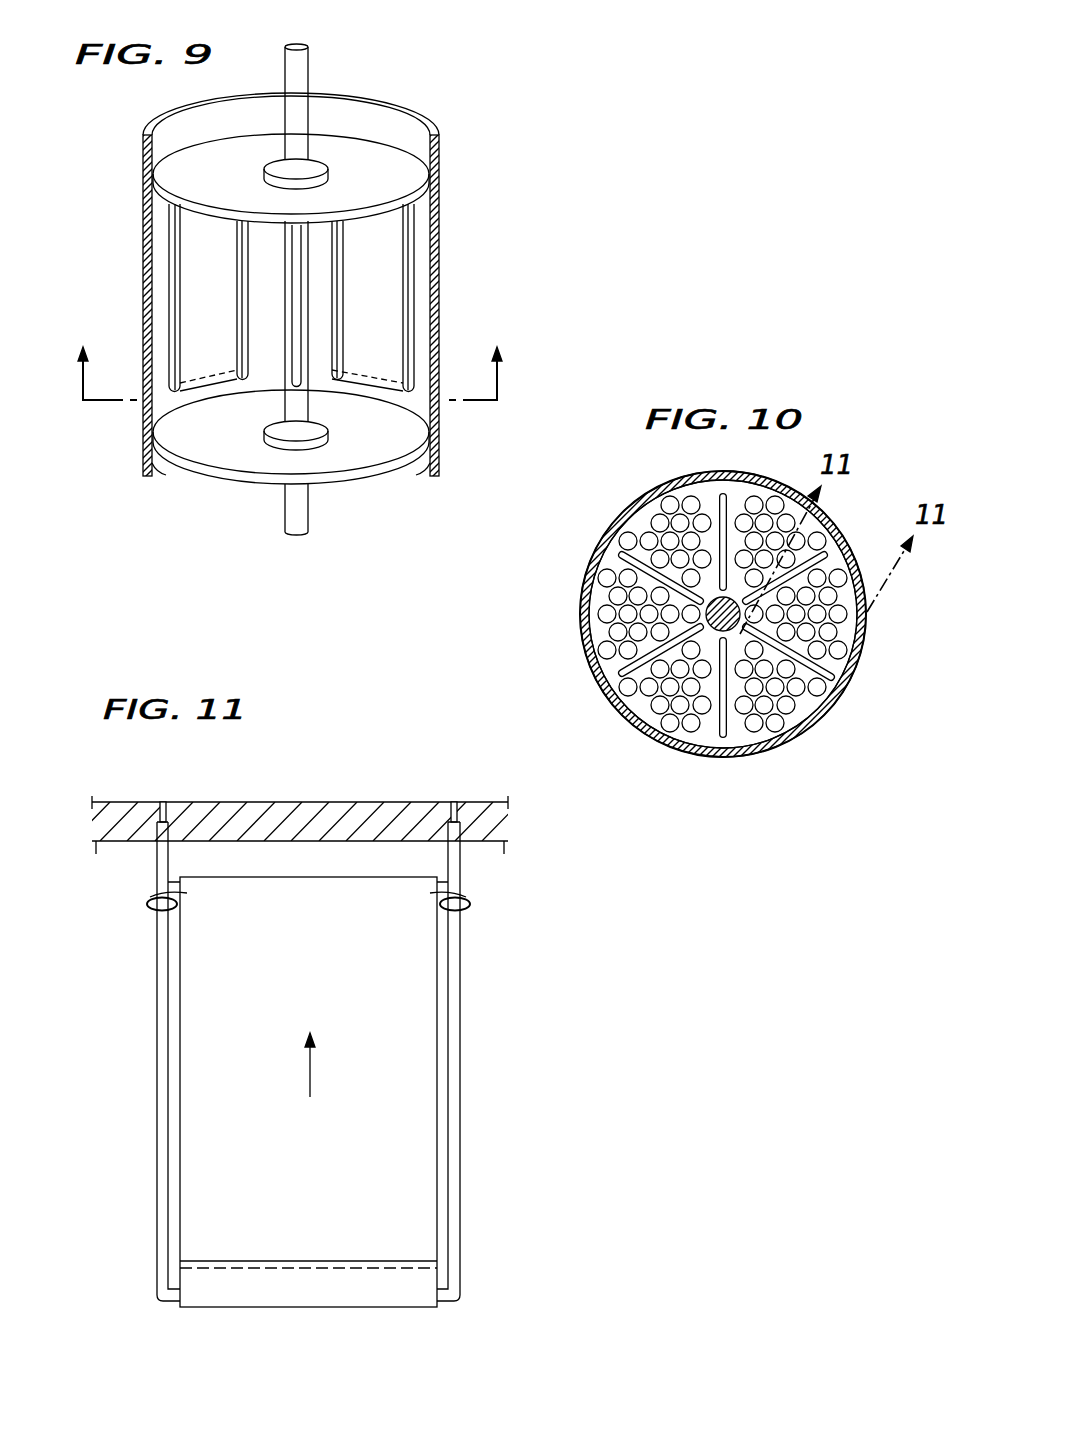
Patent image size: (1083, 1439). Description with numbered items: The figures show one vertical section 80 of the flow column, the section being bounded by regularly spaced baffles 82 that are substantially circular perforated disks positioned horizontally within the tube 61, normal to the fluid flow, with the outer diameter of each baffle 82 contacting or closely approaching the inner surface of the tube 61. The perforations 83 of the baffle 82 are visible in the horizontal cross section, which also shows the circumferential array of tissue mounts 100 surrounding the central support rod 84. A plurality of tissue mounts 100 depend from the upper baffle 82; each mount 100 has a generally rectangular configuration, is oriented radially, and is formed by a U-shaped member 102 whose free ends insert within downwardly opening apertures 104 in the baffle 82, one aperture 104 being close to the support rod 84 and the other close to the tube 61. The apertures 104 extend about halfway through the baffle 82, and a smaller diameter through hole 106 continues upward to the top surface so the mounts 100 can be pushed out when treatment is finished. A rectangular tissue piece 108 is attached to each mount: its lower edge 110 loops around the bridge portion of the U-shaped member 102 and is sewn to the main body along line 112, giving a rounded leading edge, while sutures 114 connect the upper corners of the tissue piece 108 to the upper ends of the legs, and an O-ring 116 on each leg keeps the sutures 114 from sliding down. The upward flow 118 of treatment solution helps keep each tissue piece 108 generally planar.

In FIG. 9, the vertical section 80 is at (482, 132).
In FIG. 9, the tube 61 is at (143, 200).
In FIG. 10, the tube 61 is at (653, 490).
In FIG. 9, the baffle 82 is at (363, 143).
In FIG. 10, the baffle 82 is at (613, 547).
In FIG. 10, the perforations 83 is at (638, 705).
In FIG. 9, the central support rod 84 is at (306, 63).
In FIG. 10, the central support rod 84 is at (707, 607).
In FIG. 9, the tissue mount 100 is at (294, 287).
In FIG. 10, the tissue mount 100 is at (622, 662).
In FIG. 9, the U-shaped member 102 is at (410, 253).
In FIG. 11, the U-shaped member 102 is at (462, 1033).
In FIG. 11, the aperture 104 is at (447, 835).
In FIG. 11, the through hole 106 is at (166, 810).
In FIG. 9, the tissue piece 108 is at (208, 247).
In FIG. 11, the tissue piece 108 is at (330, 1187).
In FIG. 11, the lower edge 110 is at (230, 1262).
In FIG. 11, the line 112 is at (205, 1269).
In FIG. 11, the suture 114 is at (452, 893).
In FIG. 11, the O-ring 116 is at (466, 906).
In FIG. 11, the upward flow 118 is at (310, 1070).